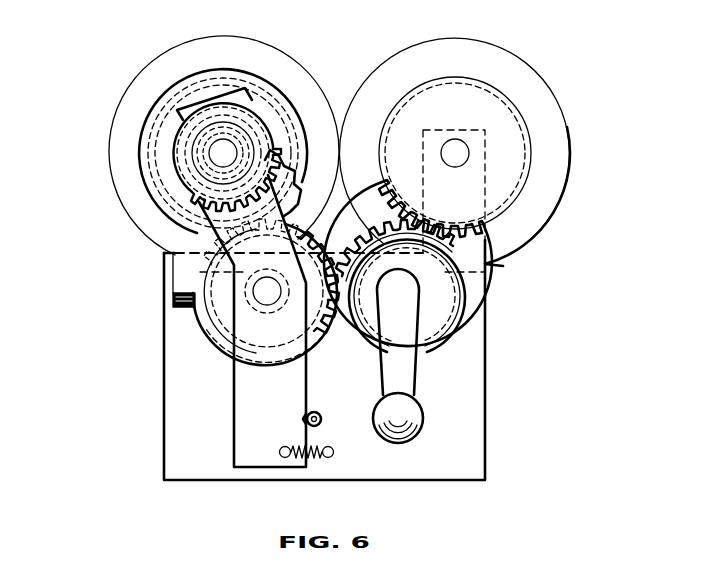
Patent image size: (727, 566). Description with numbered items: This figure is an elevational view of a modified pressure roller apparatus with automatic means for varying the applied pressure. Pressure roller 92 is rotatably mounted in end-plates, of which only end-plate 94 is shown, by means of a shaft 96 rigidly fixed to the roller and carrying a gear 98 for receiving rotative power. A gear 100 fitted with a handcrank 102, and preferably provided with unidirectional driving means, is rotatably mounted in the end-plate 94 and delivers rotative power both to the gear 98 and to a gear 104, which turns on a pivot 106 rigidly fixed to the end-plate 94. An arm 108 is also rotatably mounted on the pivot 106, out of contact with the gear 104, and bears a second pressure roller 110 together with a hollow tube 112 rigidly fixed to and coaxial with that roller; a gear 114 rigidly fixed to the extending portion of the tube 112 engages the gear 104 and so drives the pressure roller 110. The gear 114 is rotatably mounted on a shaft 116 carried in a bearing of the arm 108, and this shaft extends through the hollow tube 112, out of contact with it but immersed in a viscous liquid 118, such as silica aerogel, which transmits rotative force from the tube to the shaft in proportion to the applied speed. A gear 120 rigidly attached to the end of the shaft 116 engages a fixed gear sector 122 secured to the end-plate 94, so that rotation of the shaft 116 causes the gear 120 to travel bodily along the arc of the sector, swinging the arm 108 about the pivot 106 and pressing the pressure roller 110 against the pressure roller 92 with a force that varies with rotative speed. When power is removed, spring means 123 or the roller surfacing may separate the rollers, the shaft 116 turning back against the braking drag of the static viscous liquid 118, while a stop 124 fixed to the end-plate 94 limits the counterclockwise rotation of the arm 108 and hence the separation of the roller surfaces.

The pressure roller 92 is at (552, 85).
The end-plate 94 is at (287, 476).
The shaft 96 is at (468, 155).
The gear 98 is at (450, 80).
The gear 100 is at (447, 298).
The handcrank 102 is at (420, 413).
The gear 104 is at (222, 296).
The pivot 106 is at (262, 300).
The arm 108 is at (255, 410).
The pressure roller 110 is at (113, 183).
The hollow tube 112 is at (193, 110).
The gear 114 is at (158, 136).
The shaft 116 is at (238, 150).
The viscous liquid 118 is at (226, 133).
The gear 120 is at (183, 118).
The gear sector 122 is at (190, 236).
The spring means 123 is at (318, 458).
The stop 124 is at (318, 425).